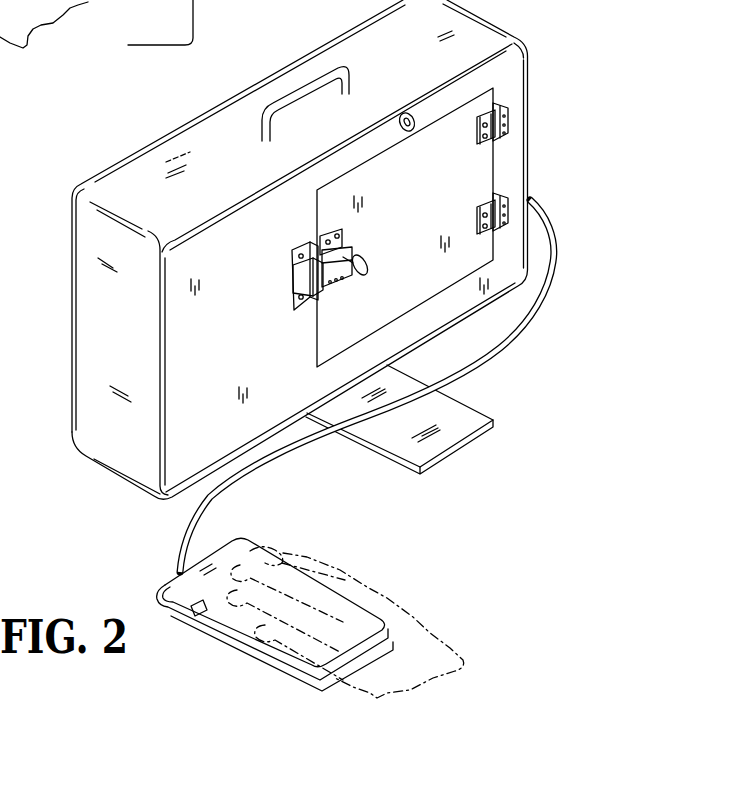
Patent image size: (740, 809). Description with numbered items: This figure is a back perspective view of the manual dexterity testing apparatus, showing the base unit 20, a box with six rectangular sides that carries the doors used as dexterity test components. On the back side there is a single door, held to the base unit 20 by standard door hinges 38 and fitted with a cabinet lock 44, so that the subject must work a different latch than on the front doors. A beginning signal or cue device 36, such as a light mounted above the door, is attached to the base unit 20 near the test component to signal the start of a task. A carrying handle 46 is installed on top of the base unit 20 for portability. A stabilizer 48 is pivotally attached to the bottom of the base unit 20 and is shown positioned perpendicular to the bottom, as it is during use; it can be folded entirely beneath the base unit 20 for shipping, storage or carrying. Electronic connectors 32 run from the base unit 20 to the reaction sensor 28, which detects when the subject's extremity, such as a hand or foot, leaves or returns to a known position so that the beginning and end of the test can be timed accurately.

The base unit 20 is at (130, 140).
The reaction sensor 28 is at (257, 541).
The electronic connectors 32 is at (507, 349).
The beginning signal or cue device 36 is at (403, 131).
The door hinges 38 is at (479, 146).
The cabinet lock 44 is at (366, 268).
The carrying handle 46 is at (347, 73).
The stabilizer 48 is at (457, 410).